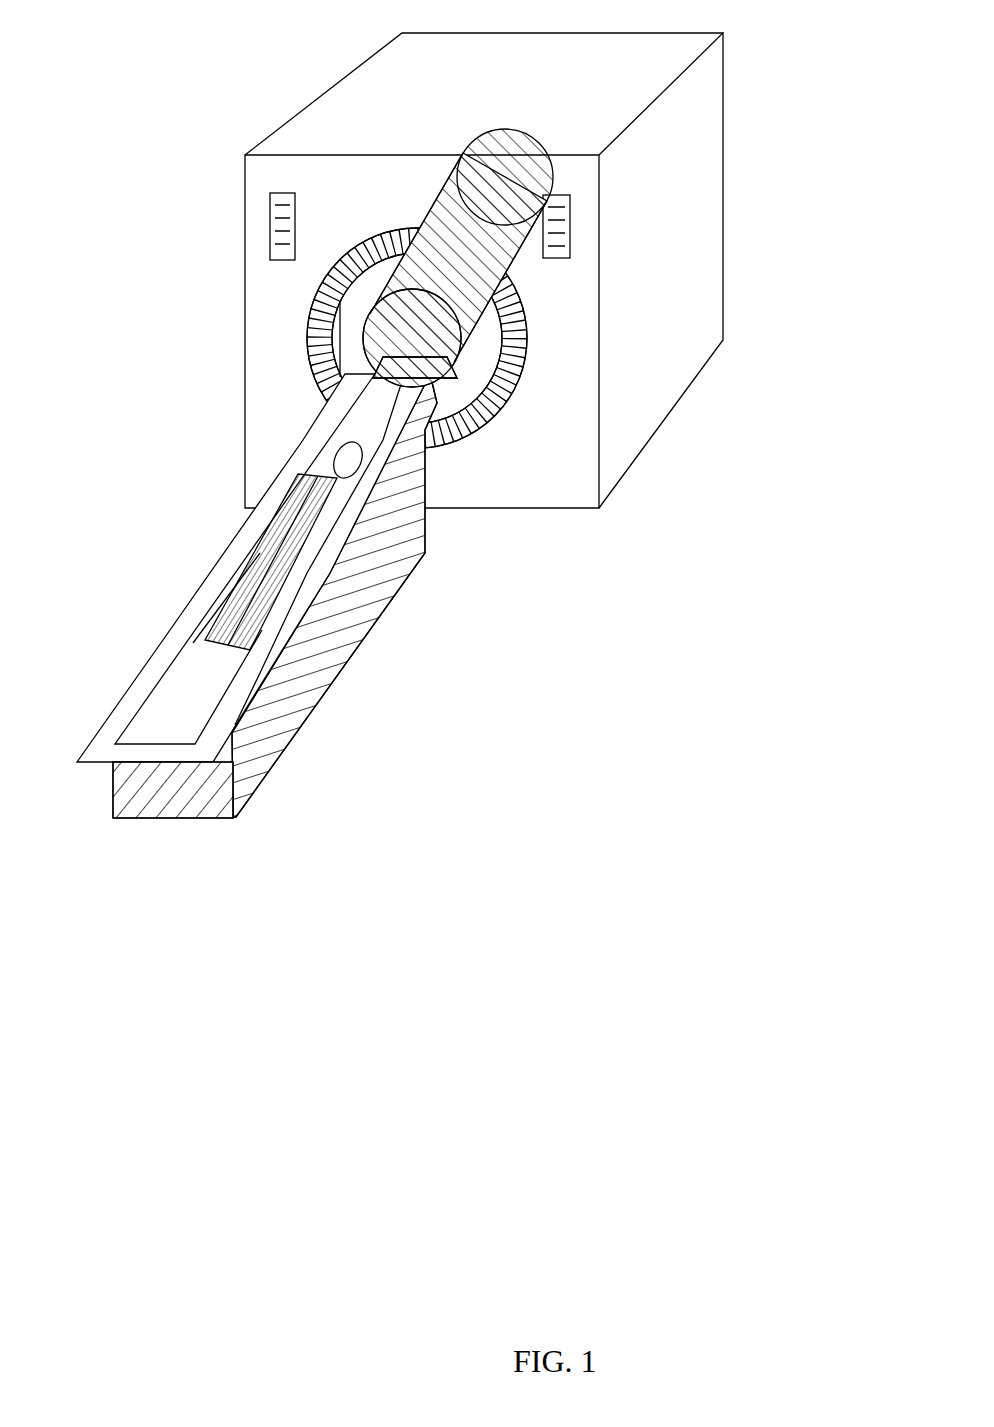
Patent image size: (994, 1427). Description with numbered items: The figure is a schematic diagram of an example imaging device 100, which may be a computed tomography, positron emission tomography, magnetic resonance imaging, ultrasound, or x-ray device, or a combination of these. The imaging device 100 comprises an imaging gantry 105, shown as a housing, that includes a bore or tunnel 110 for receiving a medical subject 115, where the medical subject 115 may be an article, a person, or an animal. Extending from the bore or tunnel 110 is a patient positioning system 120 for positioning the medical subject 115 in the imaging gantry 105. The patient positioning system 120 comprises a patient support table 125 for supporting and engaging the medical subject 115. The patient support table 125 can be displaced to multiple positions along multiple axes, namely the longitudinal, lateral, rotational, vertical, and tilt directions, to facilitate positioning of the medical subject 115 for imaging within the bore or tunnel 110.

The imaging device 100 is at (445, 433).
The imaging gantry 105 is at (672, 424).
The bore or tunnel 110 is at (365, 303).
The medical subject 115 is at (224, 549).
The patient positioning system 120 is at (380, 606).
The patient support table 125 is at (242, 650).